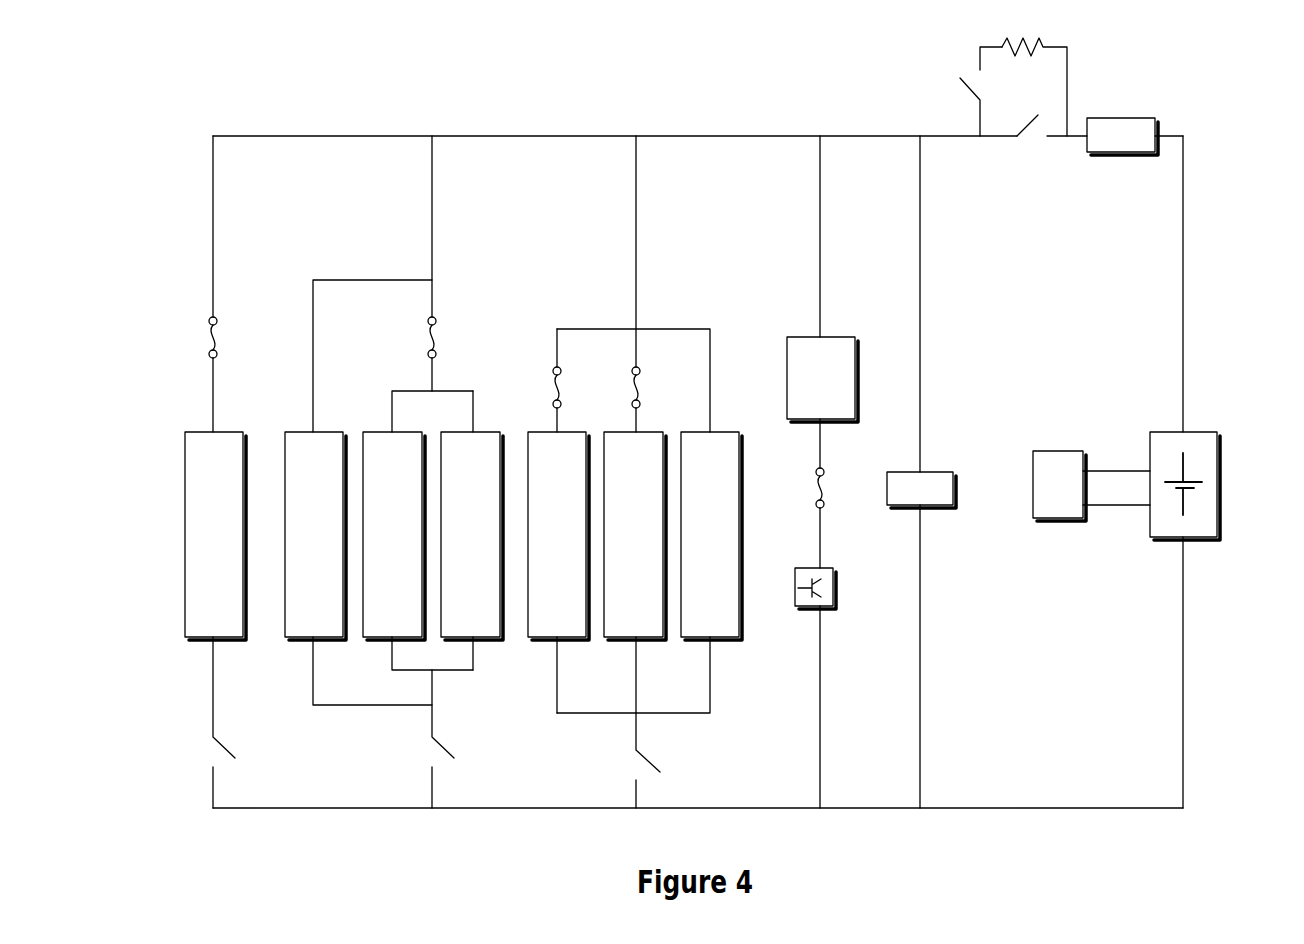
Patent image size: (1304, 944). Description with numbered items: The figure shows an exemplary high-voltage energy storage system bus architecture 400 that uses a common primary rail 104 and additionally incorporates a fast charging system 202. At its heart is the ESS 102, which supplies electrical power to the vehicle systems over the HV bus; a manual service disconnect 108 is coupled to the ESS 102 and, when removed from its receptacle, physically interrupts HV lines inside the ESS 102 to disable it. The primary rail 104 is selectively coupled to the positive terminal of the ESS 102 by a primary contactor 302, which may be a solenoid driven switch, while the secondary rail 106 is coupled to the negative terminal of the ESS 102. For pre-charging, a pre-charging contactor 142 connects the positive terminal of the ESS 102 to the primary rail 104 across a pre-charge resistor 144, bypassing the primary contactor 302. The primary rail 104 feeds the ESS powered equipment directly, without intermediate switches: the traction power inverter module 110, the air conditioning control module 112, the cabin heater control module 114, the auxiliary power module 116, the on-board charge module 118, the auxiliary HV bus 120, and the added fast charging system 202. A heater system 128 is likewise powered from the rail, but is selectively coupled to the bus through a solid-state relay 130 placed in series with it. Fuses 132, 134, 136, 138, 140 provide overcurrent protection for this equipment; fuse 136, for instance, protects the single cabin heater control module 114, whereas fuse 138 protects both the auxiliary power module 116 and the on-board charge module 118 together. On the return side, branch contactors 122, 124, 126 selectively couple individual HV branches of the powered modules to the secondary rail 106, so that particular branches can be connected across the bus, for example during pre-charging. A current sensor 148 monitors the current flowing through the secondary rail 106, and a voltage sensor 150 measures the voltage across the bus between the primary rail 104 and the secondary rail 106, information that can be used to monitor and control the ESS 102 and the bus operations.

The HV ESS bus architecture 400 is at (254, 90).
The ESS 102 is at (1218, 524).
The primary rail 104 is at (735, 135).
The secondary rail 106 is at (549, 808).
The manual service disconnect 108 is at (1045, 492).
The traction power inverter module 110 is at (697, 543).
The air conditioning control module 112 is at (620, 543).
The cabin heater control module 114 is at (544, 543).
The auxiliary power module 116 is at (457, 543).
The on-board charge module 118 is at (379, 543).
The auxiliary HV bus 120 is at (201, 543).
The branch contactor 122 is at (650, 758).
The branch contactor 124 is at (446, 745).
The branch contactor 126 is at (228, 745).
The heater system 128 is at (808, 386).
The solid-state relay 130 is at (834, 604).
The fuse 132 is at (816, 471).
The fuse 134 is at (640, 371).
The fuse 136 is at (553, 371).
The fuse 138 is at (436, 354).
The fuse 140 is at (217, 354).
The pre-charging contactor 142 is at (957, 81).
The pre-charge resistor 144 is at (1040, 56).
The current sensor 148 is at (1108, 144).
The voltage sensor 150 is at (907, 497).
The fast charging system 202 is at (301, 543).
The primary contactor 302 is at (1037, 122).